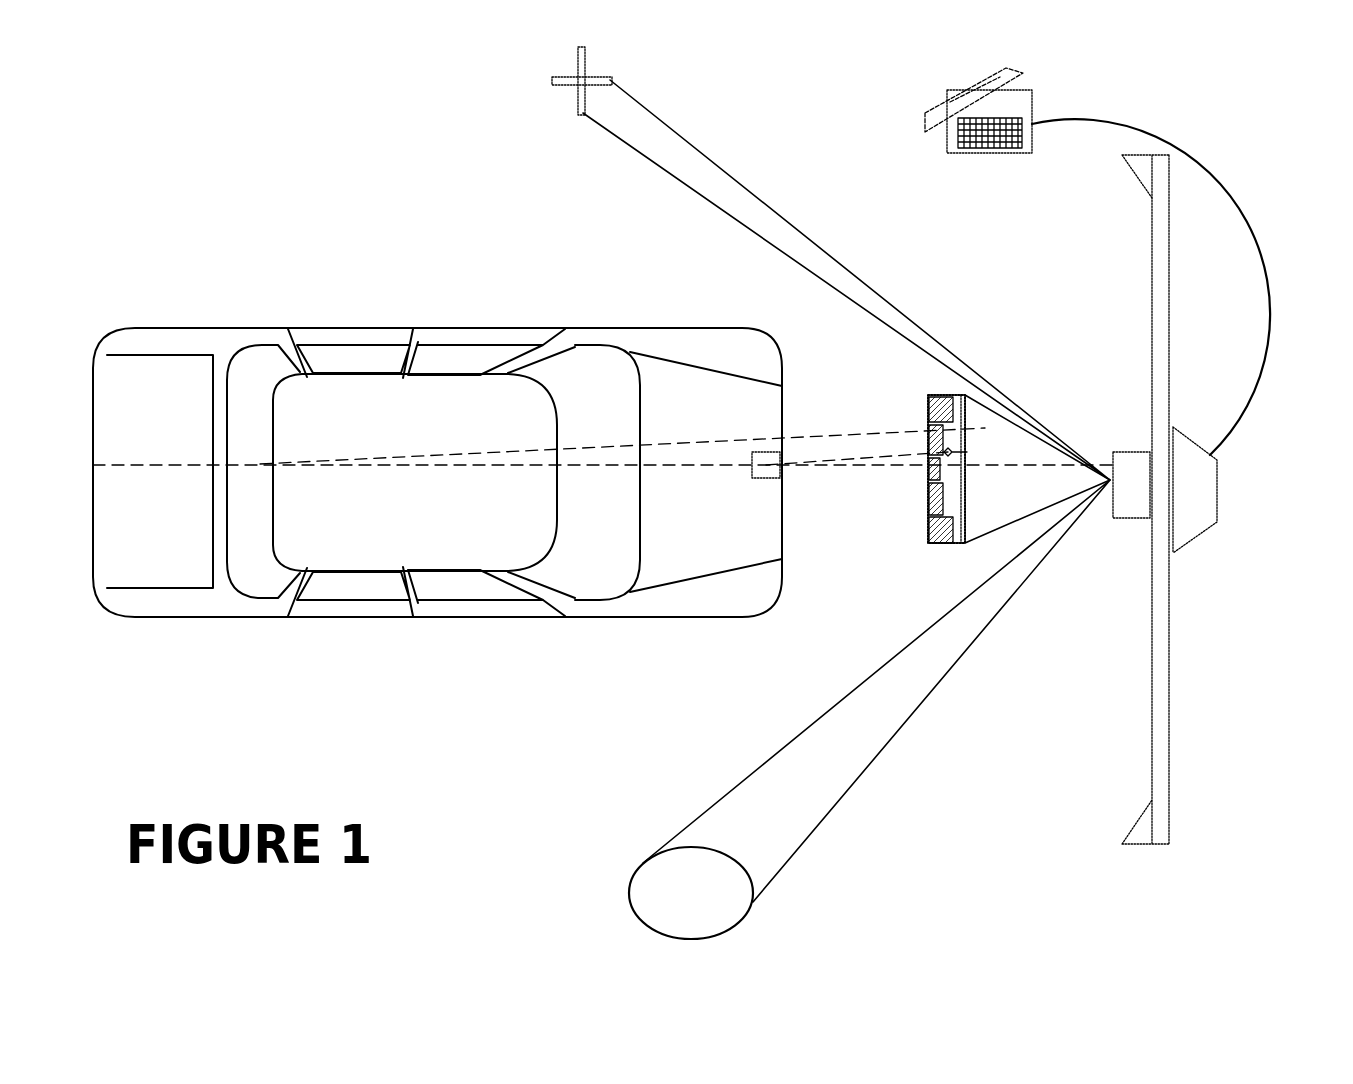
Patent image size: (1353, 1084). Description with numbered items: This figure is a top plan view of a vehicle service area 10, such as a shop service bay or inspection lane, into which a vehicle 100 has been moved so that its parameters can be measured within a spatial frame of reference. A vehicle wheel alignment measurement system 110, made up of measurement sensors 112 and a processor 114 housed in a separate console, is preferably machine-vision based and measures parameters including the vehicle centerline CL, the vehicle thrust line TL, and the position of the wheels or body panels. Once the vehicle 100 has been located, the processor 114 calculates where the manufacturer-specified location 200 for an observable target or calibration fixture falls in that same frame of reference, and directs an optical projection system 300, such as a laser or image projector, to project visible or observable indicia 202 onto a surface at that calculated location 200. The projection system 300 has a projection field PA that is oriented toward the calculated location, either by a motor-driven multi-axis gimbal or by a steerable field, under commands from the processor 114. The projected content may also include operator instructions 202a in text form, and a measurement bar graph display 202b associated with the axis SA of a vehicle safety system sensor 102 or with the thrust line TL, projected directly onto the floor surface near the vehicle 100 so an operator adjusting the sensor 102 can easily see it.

The vehicle service area 10 is at (434, 700).
The vehicle 100 is at (353, 418).
The vehicle safety system sensor 102 is at (761, 484).
The vehicle wheel alignment measurement system 110 is at (1192, 575).
The measurement sensors 112 is at (1135, 178).
The processor 114 is at (940, 158).
The manufacturer-specified location 200 is at (590, 498).
The visible or observable indicia 202 is at (563, 75).
The operator instructions 202a is at (671, 900).
The measurement bar graph display 202b is at (918, 532).
The optical projection system 300 is at (1122, 452).
The projection field PA is at (710, 207).
The vehicle thrust line TL is at (900, 430).
The vehicle centerline CL is at (873, 468).
The axis of vehicle safety system sensor SA is at (905, 456).